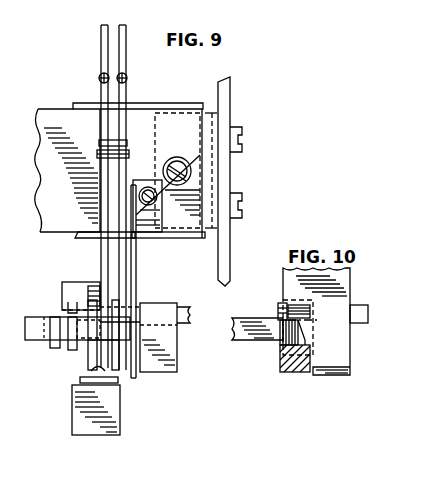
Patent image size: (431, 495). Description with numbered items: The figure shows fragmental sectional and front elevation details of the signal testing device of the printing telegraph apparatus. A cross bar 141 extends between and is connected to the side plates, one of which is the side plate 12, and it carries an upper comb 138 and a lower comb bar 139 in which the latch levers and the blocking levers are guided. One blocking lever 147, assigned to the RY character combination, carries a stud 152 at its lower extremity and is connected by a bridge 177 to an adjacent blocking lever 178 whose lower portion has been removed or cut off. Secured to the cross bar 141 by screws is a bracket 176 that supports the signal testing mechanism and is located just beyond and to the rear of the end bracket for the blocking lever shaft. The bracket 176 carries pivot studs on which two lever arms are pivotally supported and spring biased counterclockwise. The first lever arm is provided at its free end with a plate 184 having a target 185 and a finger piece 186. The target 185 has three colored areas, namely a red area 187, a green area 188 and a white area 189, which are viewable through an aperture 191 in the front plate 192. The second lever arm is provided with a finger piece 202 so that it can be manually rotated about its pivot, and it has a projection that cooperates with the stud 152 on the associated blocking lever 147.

In FIG. 9, the side plate 12 is at (230, 120).
In FIG. 9, the upper comb 138 is at (78, 102).
In FIG. 9, the lower comb bar 139 is at (92, 238).
In FIG. 9, the cross bar 141 is at (150, 104).
In FIG. 9, the blocking lever 147 is at (101, 54).
In FIG. 9, the stud 152 is at (93, 285).
In FIG. 9, the bracket 176 is at (136, 287).
In FIG. 9, the bridge 177 is at (110, 150).
In FIG. 9, the adjacent blocking lever 178 is at (126, 64).
In FIG. 9, the plate 184 is at (88, 345).
In FIG. 9, the target 185 is at (166, 372).
In FIG. 9, the finger piece 186 is at (40, 341).
In FIG. 10, the red area 187 is at (280, 342).
In FIG. 10, the green area 188 is at (281, 362).
In FIG. 10, the white area 189 is at (280, 303).
In FIG. 10, the aperture 191 is at (311, 312).
In FIG. 10, the front plate 192 is at (347, 376).
In FIG. 9, the finger piece 202 is at (180, 306).
In FIG. 10, the finger piece 202 is at (358, 323).